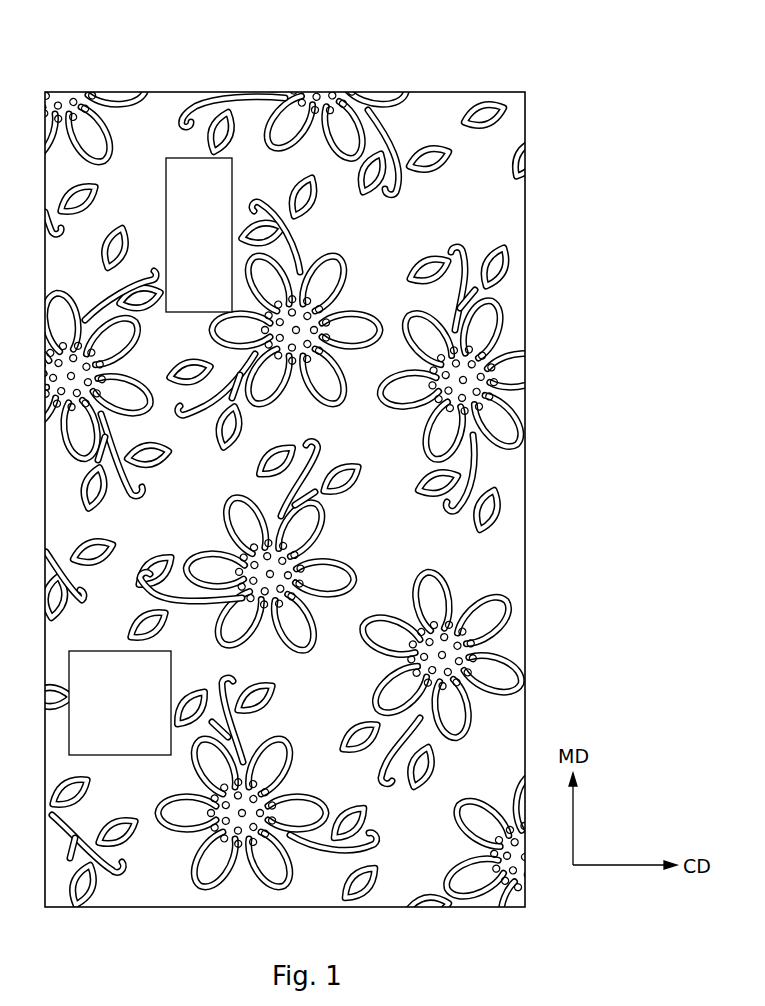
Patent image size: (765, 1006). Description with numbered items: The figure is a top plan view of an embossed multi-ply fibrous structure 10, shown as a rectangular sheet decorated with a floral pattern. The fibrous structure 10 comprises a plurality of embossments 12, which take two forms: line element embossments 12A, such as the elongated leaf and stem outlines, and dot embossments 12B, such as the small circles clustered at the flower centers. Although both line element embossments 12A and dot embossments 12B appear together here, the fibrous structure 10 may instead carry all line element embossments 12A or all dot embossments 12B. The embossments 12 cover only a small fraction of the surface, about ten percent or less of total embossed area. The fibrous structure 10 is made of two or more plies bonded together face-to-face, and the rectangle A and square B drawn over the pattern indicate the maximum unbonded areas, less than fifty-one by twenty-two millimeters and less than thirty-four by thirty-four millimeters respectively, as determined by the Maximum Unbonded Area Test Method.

The embossed multi-ply fibrous structure 10 is at (352, 481).
The embossments 12 is at (323, 250).
The line element embossments 12A is at (506, 277).
The dot embossments 12B is at (499, 383).